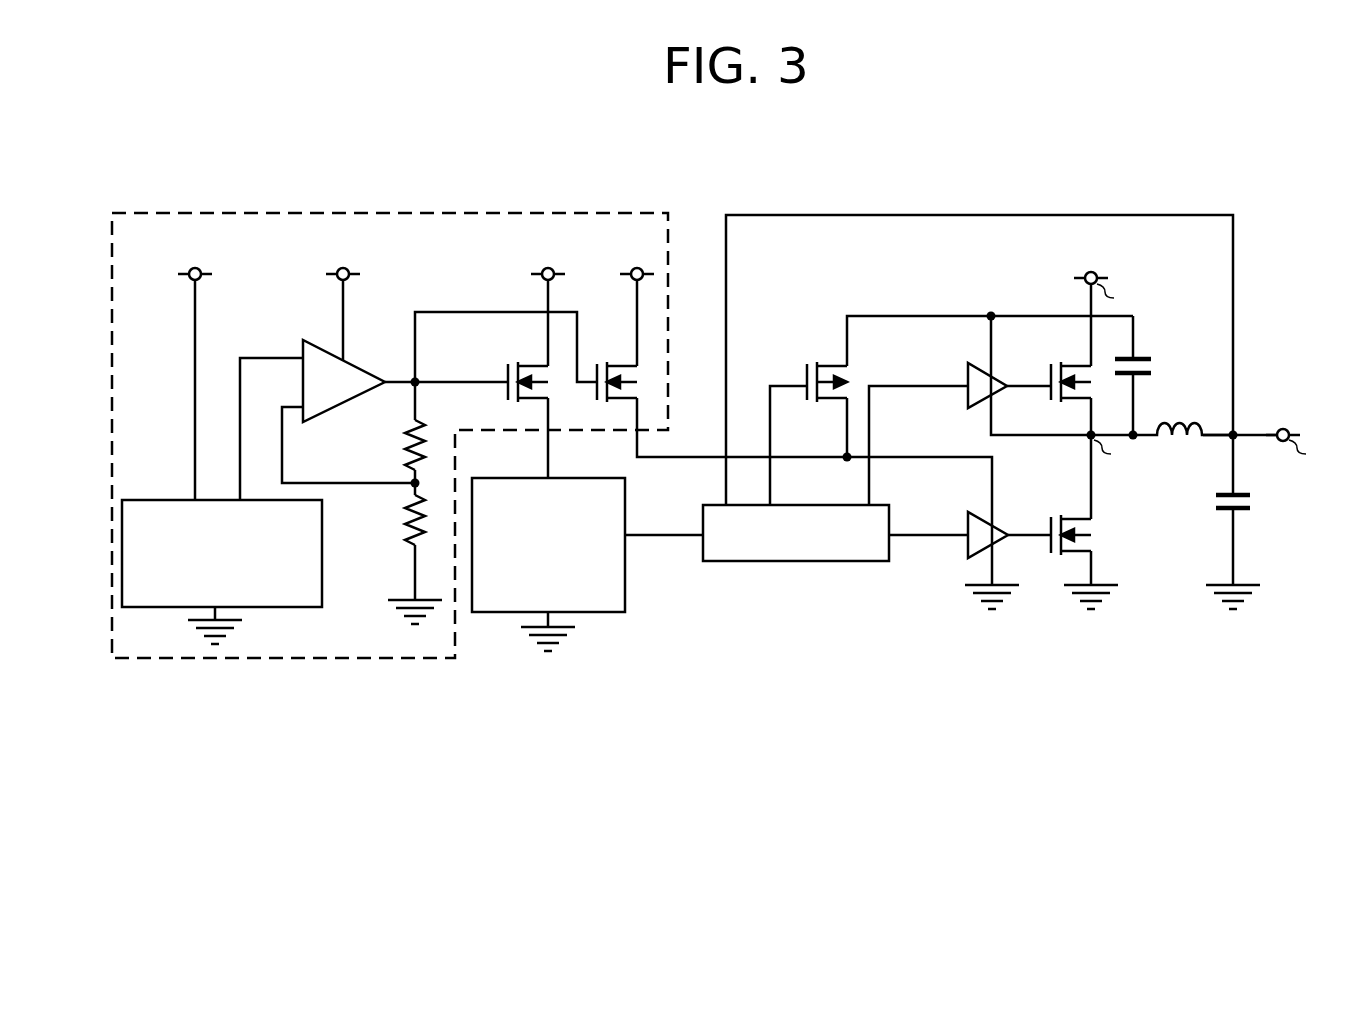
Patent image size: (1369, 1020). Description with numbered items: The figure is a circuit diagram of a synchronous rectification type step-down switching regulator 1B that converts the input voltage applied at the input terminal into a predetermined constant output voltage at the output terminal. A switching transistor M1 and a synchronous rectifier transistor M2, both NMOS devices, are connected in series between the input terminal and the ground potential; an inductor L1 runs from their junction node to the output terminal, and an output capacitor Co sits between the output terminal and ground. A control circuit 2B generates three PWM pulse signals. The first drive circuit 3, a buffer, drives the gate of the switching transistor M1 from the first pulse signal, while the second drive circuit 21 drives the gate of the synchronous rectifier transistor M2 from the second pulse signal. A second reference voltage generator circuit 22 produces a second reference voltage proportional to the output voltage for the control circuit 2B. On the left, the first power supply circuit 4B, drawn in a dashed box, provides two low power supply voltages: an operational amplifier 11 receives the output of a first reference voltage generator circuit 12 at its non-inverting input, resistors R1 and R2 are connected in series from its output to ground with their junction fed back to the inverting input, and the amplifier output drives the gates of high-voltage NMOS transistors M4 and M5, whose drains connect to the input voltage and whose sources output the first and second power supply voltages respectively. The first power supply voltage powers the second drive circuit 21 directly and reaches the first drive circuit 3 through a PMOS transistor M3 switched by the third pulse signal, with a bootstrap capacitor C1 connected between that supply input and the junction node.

The switching regulator 1B is at (986, 207).
The first power supply circuit 4B is at (476, 207).
The control circuit 2B is at (865, 563).
The first drive circuit 3 is at (998, 370).
The second drive circuit 21 is at (996, 522).
The operational amplifier 11 is at (357, 365).
The first reference voltage generator circuit 12 is at (322, 519).
The second reference voltage generator circuit 22 is at (603, 613).
The switching transistor M1 is at (1070, 371).
The synchronous rectifier transistor M2 is at (1070, 524).
The PMOS transistor M3 is at (826, 371).
The NMOS transistor M4 is at (616, 371).
The NMOS transistor M5 is at (526, 371).
The resistor R1 is at (398, 445).
The resistor R2 is at (398, 520).
The bootstrap capacitor C1 is at (1150, 375).
The inductor L1 is at (1183, 414).
The output capacitor Co is at (1244, 522).